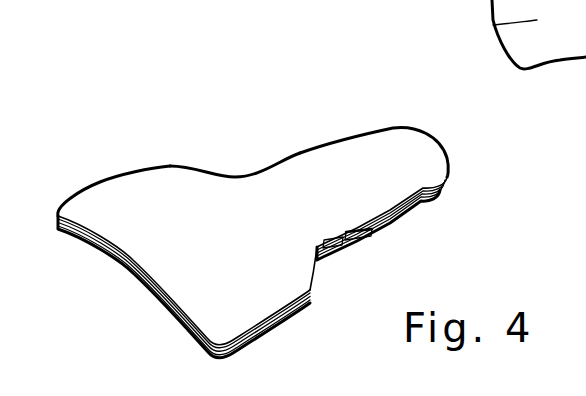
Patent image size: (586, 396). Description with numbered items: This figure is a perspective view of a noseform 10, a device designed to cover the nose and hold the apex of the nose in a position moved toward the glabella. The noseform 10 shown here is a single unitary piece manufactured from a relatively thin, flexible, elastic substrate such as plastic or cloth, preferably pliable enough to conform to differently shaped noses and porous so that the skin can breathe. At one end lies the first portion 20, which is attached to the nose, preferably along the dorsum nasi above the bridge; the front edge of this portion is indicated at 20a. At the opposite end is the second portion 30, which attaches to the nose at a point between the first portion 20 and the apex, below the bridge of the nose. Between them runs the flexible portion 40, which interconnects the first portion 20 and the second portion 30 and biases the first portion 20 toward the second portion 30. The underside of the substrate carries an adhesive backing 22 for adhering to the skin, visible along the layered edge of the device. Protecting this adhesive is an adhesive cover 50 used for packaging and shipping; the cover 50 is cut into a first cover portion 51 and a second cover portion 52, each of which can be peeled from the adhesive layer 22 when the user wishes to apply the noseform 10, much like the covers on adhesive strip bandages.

The noseform 10 is at (309, 106).
The first portion 20 is at (402, 152).
The front edge of toe portion 20a is at (313, 183).
The adhesive backing 22 is at (58, 217).
The second portion 30 is at (177, 247).
The flexible portion 40 is at (235, 208).
The adhesive cover 50 is at (143, 295).
The first cover portion 51 is at (412, 217).
The second cover portion 52 is at (280, 323).